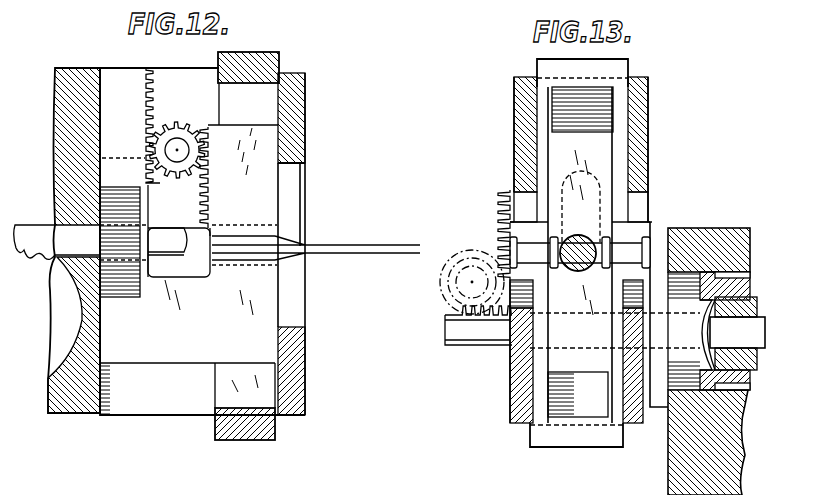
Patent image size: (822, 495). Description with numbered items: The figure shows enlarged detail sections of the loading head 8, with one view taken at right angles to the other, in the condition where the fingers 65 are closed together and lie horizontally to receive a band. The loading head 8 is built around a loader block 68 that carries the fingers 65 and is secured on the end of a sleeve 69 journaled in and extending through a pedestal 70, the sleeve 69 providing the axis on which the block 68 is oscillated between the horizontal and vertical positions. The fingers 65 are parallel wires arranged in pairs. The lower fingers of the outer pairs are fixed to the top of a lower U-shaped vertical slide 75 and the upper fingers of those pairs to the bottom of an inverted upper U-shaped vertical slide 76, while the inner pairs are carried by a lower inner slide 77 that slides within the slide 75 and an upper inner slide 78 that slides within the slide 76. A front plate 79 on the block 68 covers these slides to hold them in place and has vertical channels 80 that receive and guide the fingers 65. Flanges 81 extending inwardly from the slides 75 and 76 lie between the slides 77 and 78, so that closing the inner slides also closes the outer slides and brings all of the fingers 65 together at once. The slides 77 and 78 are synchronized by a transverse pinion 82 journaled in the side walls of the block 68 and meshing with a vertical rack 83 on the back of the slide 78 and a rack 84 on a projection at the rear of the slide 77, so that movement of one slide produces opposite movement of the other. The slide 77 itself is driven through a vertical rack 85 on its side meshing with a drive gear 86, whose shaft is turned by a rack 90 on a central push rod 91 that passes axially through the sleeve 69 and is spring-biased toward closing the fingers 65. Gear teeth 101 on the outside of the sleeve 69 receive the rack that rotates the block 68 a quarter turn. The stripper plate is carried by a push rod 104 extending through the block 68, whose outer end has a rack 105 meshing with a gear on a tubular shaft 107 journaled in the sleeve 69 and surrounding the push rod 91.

In FIG. 12, the loading head 8 is at (315, 196).
In FIG. 13, the loading head 8 is at (660, 176).
In FIG. 12, the fingers 65 is at (380, 243).
In FIG. 13, the fingers 65 is at (550, 244).
In FIG. 12, the loader block 68 is at (70, 414).
In FIG. 13, the loader block 68 is at (650, 141).
In FIG. 13, the sleeve 69 is at (703, 278).
In FIG. 13, the pedestal 70 is at (670, 458).
In FIG. 12, the lower U-shaped vertical slide 75 is at (214, 437).
In FIG. 13, the lower U-shaped vertical slide 75 is at (530, 437).
In FIG. 12, the upper U-shaped vertical slide 76 is at (282, 61).
In FIG. 13, the upper U-shaped vertical slide 76 is at (630, 69).
In FIG. 12, the lower inner slide 77 is at (175, 356).
In FIG. 13, the lower inner slide 77 is at (589, 364).
In FIG. 12, the upper inner slide 78 is at (268, 146).
In FIG. 13, the upper inner slide 78 is at (563, 145).
In FIG. 12, the front plate 79 is at (306, 354).
In FIG. 12, the vertical channels 80 is at (293, 299).
In FIG. 12, the flanges 81 is at (257, 248).
In FIG. 12, the transverse pinion 82 is at (177, 121).
In FIG. 12, the vertical rack 83 is at (206, 193).
In FIG. 12, the rack 84 is at (150, 86).
In FIG. 13, the rack 84 is at (568, 102).
In FIG. 12, the vertical rack 85 is at (121, 286).
In FIG. 13, the vertical rack 85 is at (505, 215).
In FIG. 13, the drive gear 86 is at (440, 284).
In FIG. 13, the rack 90 is at (447, 331).
In FIG. 13, the central push rod 91 is at (752, 328).
In FIG. 13, the gear teeth 101 is at (752, 276).
In FIG. 12, the push rod 104 is at (44, 215).
In FIG. 13, the push rod 104 is at (580, 236).
In FIG. 12, the rack 105 is at (36, 260).
In FIG. 13, the tubular shaft 107 is at (756, 375).